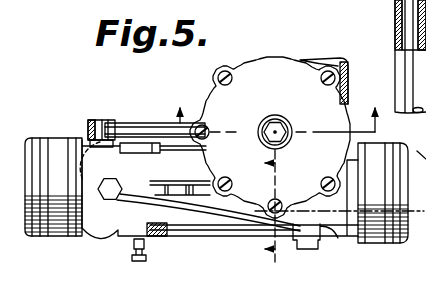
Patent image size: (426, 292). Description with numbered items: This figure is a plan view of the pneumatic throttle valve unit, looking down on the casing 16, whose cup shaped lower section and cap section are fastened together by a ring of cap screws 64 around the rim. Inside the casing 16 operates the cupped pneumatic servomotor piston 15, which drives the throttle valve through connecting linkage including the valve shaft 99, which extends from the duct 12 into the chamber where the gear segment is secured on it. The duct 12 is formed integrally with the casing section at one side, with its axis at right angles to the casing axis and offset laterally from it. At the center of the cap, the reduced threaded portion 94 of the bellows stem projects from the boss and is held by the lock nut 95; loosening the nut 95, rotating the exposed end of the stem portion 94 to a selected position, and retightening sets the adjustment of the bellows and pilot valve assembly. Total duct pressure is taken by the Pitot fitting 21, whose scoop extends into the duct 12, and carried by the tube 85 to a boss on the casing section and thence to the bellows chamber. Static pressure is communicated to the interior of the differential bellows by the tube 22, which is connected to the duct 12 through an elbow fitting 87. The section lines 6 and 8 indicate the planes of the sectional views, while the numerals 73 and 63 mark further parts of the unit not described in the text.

The Pitot fitting 21 is at (143, 122).
The tube 85 is at (137, 128).
The section line 6- 6 is at (277, 108).
The cap screws 64 is at (227, 70).
The casing 16 is at (280, 68).
The lock nut 95 is at (276, 119).
The threaded portion 94 is at (290, 124).
The section line 8- 8 is at (260, 206).
The knob 73 is at (414, 146).
The tube 22 is at (137, 196).
The elbow fitting 87 is at (109, 196).
The duct 12 is at (243, 231).
The shaft 99 is at (307, 250).
The handle 63 is at (413, 267).
The pneumatic servomotor piston 15 is at (425, 284).